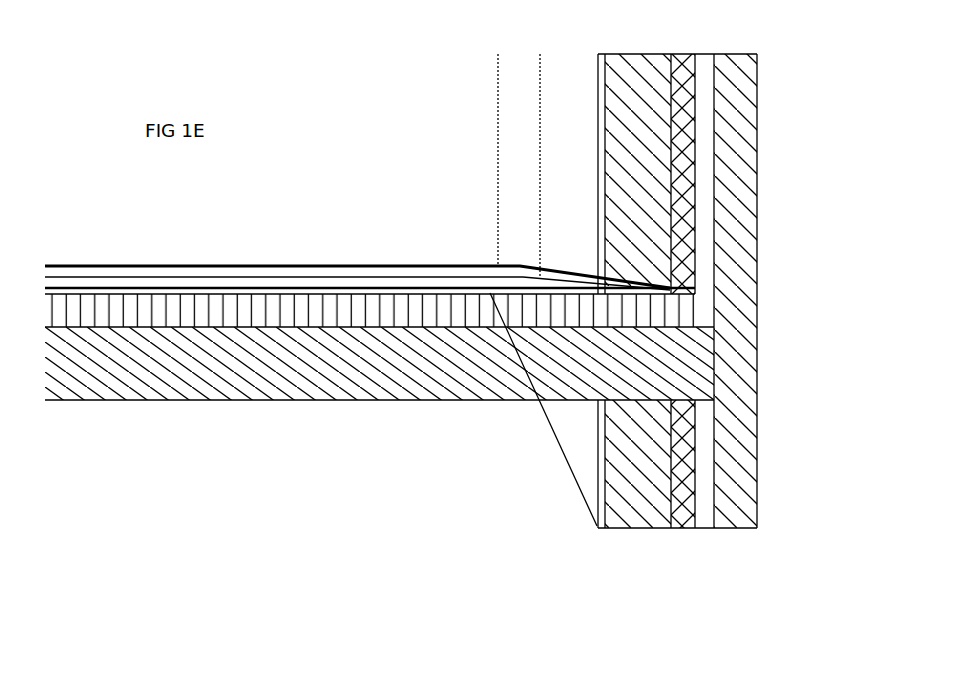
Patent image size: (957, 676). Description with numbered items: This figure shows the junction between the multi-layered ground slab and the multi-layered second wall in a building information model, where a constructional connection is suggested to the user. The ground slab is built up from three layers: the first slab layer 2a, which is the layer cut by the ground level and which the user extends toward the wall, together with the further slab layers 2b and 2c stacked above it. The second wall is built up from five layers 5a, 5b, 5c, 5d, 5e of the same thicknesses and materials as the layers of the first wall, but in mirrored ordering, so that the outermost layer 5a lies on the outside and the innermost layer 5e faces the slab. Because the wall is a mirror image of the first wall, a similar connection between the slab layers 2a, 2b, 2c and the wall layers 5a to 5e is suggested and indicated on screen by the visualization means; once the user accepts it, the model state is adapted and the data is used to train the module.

The first slab layer 2a is at (432, 399).
The layer of the ground slab 2b is at (405, 322).
The layer of the ground slab 2c is at (350, 290).
The layer of the second wall 5a is at (757, 504).
The layer of the second wall 5b is at (700, 530).
The layer of the second wall 5c is at (670, 530).
The layer of the second wall 5d is at (625, 530).
The layer of the second wall 5e is at (597, 528).